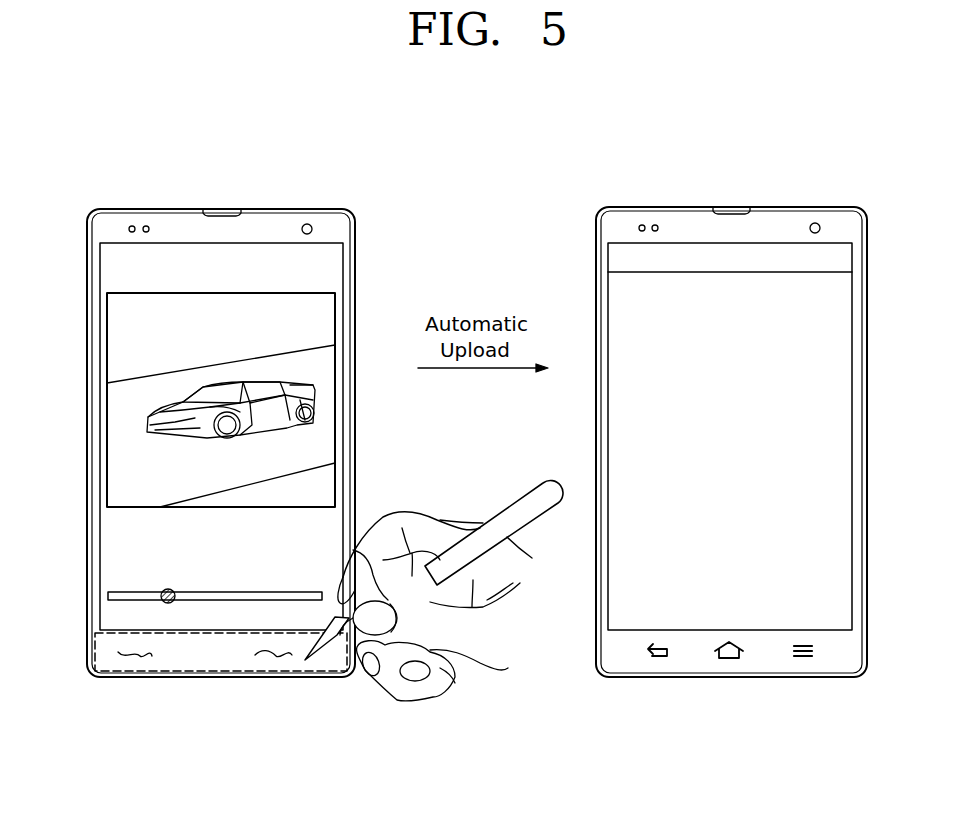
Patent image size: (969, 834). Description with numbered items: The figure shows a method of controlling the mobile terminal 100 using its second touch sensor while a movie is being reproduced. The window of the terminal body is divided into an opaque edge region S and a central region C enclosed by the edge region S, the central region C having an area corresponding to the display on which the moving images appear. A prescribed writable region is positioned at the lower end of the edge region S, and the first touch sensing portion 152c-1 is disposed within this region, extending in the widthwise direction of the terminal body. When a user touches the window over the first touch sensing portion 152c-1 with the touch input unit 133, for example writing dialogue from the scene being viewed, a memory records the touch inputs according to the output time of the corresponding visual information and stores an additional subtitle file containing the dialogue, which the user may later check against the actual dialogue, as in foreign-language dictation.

The mobile terminal 100 is at (153, 205).
The touch input unit 133 is at (507, 508).
The first touch sensing portion 152c-1 is at (168, 673).
The central region C is at (117, 543).
The edge region S is at (95, 585).